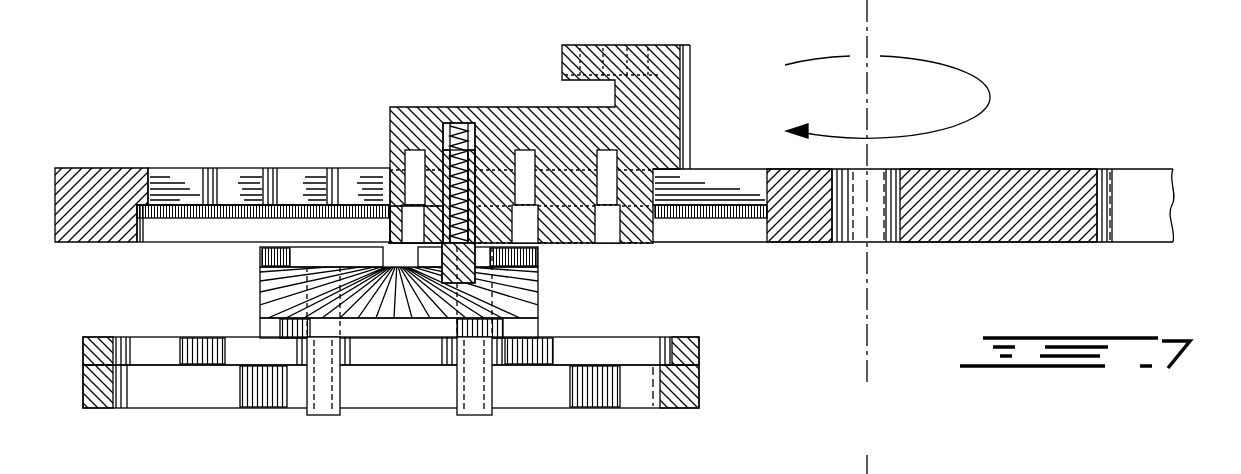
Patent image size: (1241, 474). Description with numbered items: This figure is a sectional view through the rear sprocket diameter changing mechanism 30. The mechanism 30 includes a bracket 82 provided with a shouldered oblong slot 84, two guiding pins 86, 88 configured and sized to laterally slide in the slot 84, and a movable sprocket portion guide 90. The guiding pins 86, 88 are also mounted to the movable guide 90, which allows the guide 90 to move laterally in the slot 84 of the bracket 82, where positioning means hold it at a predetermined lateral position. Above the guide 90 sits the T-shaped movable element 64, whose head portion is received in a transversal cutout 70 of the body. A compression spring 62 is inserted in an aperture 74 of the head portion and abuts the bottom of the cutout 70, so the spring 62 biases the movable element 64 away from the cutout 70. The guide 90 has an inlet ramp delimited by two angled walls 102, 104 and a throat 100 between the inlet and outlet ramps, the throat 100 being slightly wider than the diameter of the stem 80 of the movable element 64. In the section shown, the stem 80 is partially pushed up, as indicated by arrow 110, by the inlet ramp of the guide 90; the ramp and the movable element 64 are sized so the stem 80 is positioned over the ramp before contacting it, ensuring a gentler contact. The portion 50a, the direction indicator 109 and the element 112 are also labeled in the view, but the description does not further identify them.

The rear sprocket diameter changing mechanism 30 is at (435, 352).
The frame arm 50a is at (533, 105).
The compression spring 62 is at (438, 142).
The T-shaped movable element 64 is at (438, 224).
The transversal cutout 70 is at (468, 130).
The aperture 74 is at (440, 128).
The stem 80 is at (522, 246).
The bracket 82 is at (700, 383).
The shouldered oblong slot 84 is at (645, 348).
The guiding pin 86 is at (322, 400).
The guiding pin 88 is at (468, 410).
The movable sprocket portion guide 90 is at (416, 290).
The throat 100 is at (333, 292).
The angled wall 102 is at (278, 256).
The angled wall 104 is at (538, 260).
The direction of rotation 109 is at (990, 96).
The arrow 110 is at (452, 307).
The base 112 is at (366, 469).